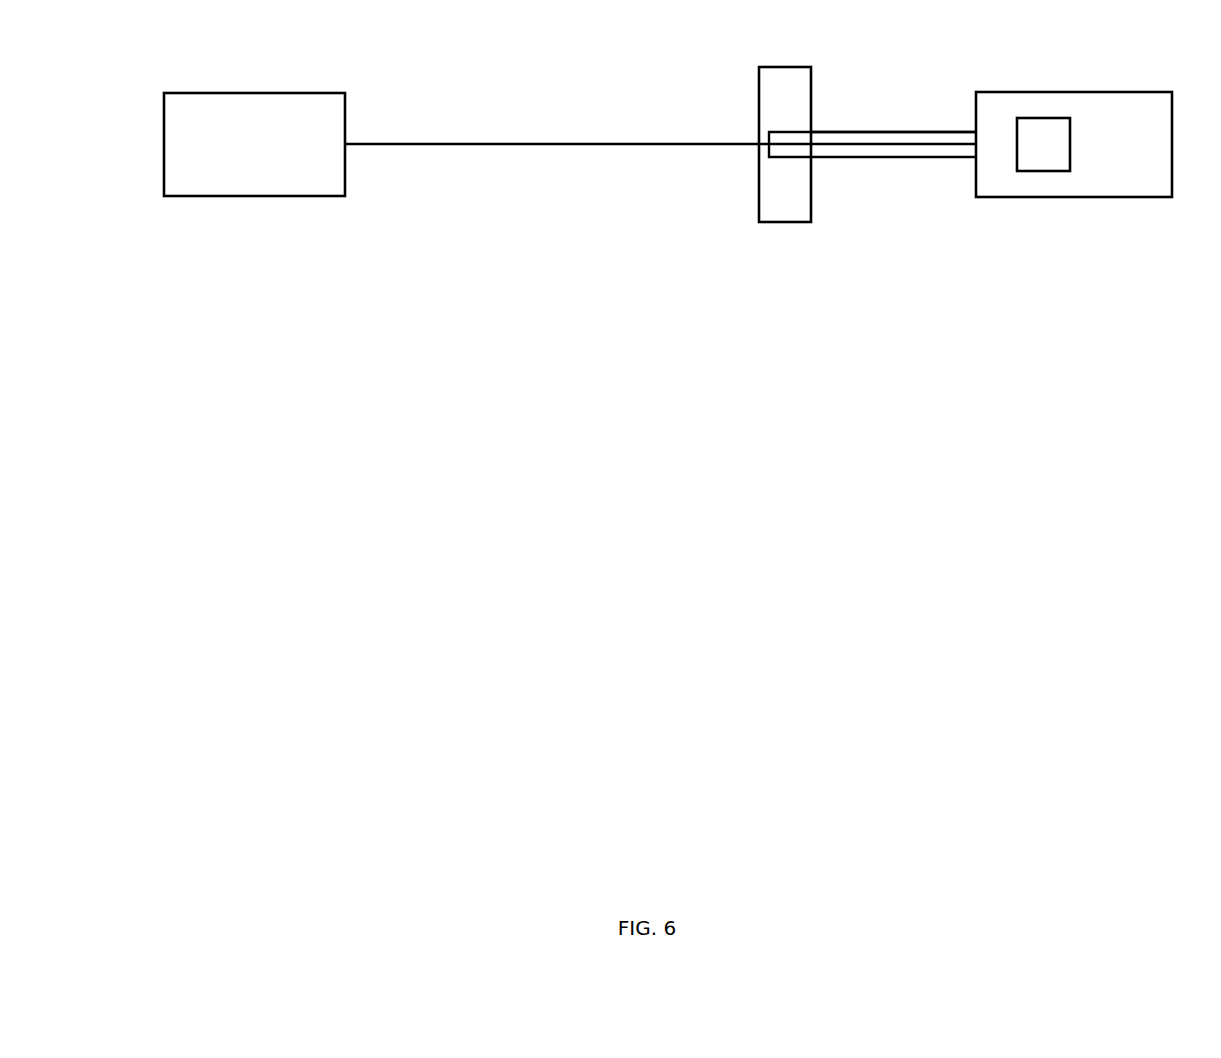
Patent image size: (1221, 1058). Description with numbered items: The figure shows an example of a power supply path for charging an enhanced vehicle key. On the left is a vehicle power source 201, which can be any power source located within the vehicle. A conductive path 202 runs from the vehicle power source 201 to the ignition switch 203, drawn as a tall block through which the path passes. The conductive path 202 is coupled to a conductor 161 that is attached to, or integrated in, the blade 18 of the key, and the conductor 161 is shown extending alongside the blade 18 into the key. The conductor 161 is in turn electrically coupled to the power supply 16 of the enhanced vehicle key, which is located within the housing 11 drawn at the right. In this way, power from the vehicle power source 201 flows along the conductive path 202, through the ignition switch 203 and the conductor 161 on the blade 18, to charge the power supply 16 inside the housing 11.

The vehicle power source 201 is at (254, 144).
The conductive path 202 is at (605, 140).
The ignition switch 203 is at (785, 144).
The conductor 161 is at (920, 143).
The blade 18 is at (873, 130).
The housing 11 is at (1106, 92).
The power supply 16 is at (1043, 144).